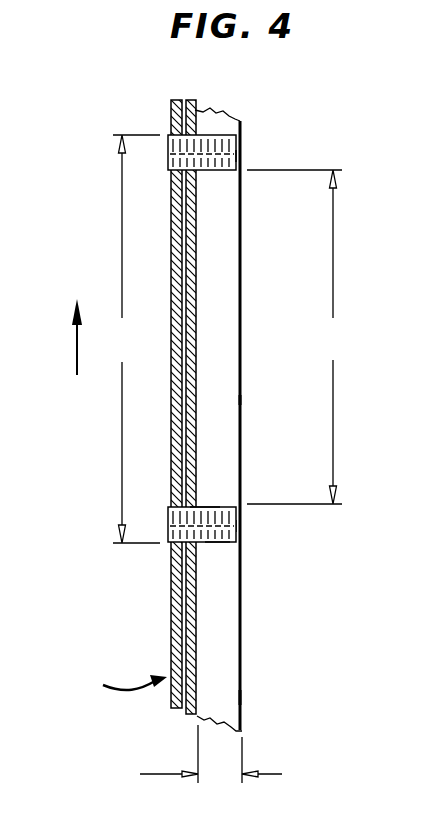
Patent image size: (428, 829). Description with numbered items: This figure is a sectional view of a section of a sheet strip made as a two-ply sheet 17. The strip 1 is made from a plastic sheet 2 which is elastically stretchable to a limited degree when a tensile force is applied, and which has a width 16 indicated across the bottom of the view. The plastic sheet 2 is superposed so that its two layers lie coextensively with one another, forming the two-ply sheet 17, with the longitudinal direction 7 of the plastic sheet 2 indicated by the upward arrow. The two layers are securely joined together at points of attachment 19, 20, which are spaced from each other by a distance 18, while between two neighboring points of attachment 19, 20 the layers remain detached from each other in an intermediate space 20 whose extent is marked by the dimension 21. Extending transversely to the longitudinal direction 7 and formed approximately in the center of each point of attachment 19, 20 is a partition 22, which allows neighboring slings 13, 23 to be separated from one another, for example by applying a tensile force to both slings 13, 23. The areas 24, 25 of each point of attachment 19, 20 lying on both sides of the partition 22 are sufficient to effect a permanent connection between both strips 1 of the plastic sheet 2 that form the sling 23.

The elongated strip 1 is at (212, 263).
The plastic sheet 2 is at (230, 330).
The longitudinal direction 7 is at (75, 352).
The sling 13 is at (230, 400).
The width 16 is at (211, 755).
The two-ply sheet 17 is at (122, 687).
The distance 18 is at (136, 339).
The point of attachment 19 is at (237, 147).
The point of attachment 20 is at (237, 515).
The plate section length 21 is at (296, 337).
The partition 22 is at (217, 170).
The sling 23 is at (230, 697).
The area of point of attachment 24 is at (206, 507).
The area of point of attachment 25 is at (216, 528).